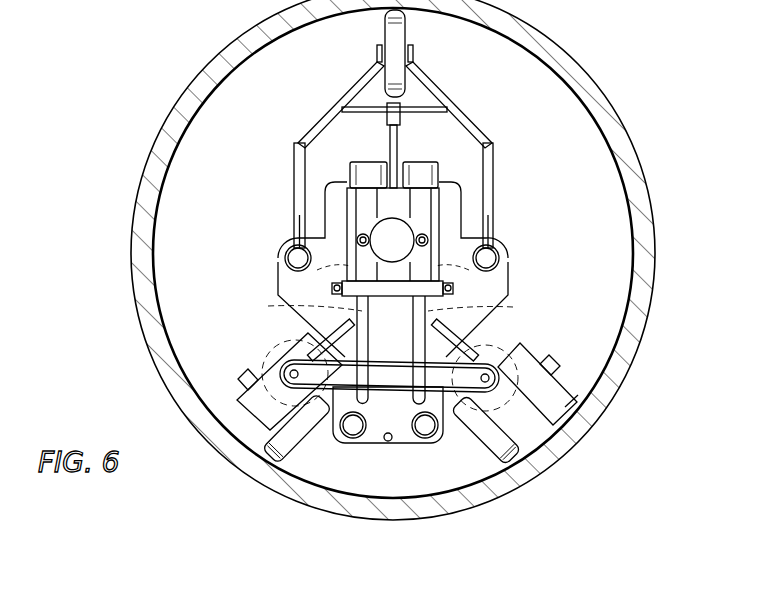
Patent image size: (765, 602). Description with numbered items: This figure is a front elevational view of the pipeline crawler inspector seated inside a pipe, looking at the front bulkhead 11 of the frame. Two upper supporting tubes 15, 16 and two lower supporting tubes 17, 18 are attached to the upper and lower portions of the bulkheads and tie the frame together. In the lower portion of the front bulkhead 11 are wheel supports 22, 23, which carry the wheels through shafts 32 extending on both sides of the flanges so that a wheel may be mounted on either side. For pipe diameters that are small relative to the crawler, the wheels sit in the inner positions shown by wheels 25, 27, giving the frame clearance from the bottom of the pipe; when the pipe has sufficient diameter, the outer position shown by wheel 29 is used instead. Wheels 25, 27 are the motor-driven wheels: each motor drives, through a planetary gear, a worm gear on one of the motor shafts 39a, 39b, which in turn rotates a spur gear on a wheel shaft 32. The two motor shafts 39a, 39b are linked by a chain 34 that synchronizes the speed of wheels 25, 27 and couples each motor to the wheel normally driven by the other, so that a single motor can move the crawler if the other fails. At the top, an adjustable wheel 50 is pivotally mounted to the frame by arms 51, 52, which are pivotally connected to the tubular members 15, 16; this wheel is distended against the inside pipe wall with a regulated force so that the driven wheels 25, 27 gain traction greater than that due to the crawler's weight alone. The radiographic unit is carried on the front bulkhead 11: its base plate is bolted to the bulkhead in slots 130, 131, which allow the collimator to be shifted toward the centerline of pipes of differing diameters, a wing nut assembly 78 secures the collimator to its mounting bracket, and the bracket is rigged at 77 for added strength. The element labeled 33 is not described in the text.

The adjustable wheel 50 is at (401, 32).
The arm 51 is at (461, 120).
The arm 52 is at (330, 120).
The wing nut assembly 78 is at (359, 236).
The supporting tube 15 is at (287, 252).
The supporting tube 16 is at (497, 253).
The front bulkhead 11 is at (279, 292).
The slot 130 is at (296, 304).
The slot 131 is at (492, 304).
The rigging of mounting bracket 77 is at (396, 285).
The pulley guards 33 is at (263, 351).
The motor shaft 39a is at (294, 361).
The motor shaft 39b is at (494, 368).
The wheel shaft 32 is at (237, 375).
The wheel support 23 is at (243, 405).
The wheel support 22 is at (568, 413).
The wheel 29 is at (565, 407).
The wheel 27 is at (270, 458).
The wheel 25 is at (512, 462).
The supporting tube 17 is at (350, 433).
The supporting tube 18 is at (423, 436).
The chain 34 is at (382, 400).